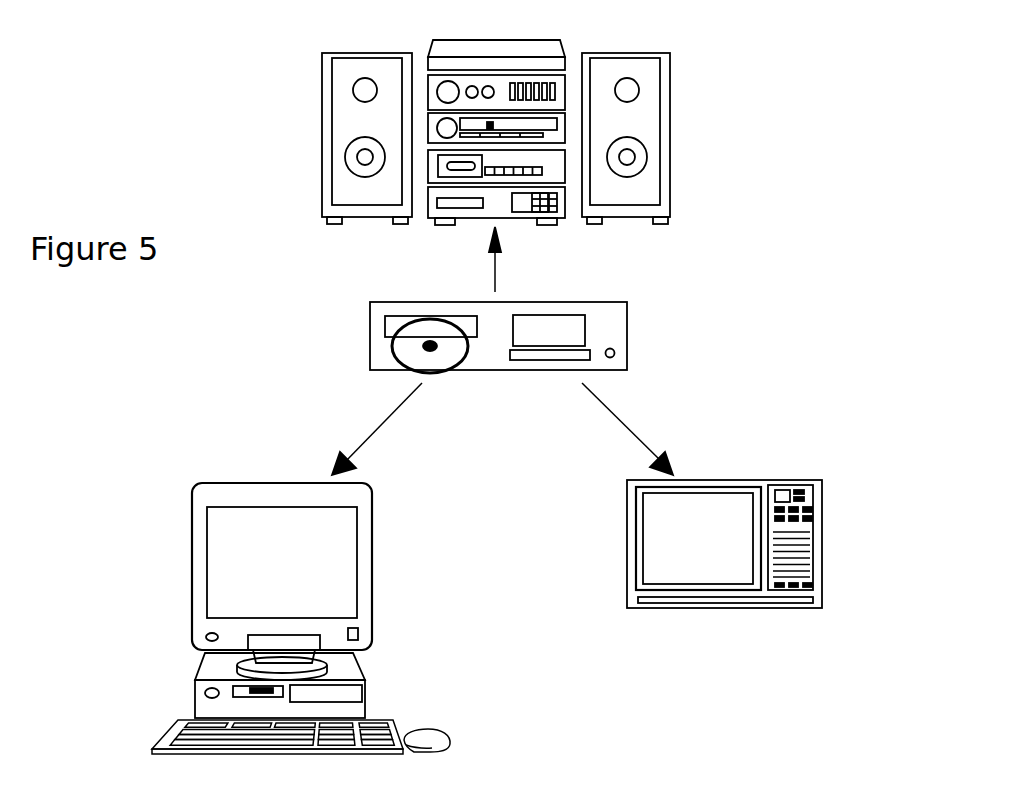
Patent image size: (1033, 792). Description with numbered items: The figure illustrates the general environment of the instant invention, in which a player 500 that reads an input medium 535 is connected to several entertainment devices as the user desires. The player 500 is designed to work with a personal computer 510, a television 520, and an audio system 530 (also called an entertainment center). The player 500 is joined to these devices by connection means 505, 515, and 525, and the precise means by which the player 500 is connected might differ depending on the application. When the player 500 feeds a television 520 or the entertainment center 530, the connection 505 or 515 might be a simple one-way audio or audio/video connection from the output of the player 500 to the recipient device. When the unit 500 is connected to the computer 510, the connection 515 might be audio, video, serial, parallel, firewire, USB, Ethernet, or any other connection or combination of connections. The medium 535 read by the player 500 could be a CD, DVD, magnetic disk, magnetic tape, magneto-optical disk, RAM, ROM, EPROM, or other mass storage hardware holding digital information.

The player 500 is at (638, 316).
The connection 505 is at (495, 276).
The personal computer 510 is at (190, 460).
The connection 515 is at (372, 428).
The television 520 is at (610, 550).
The connection means 525 is at (623, 422).
The audio system 530 is at (688, 72).
The input media 535 is at (442, 360).